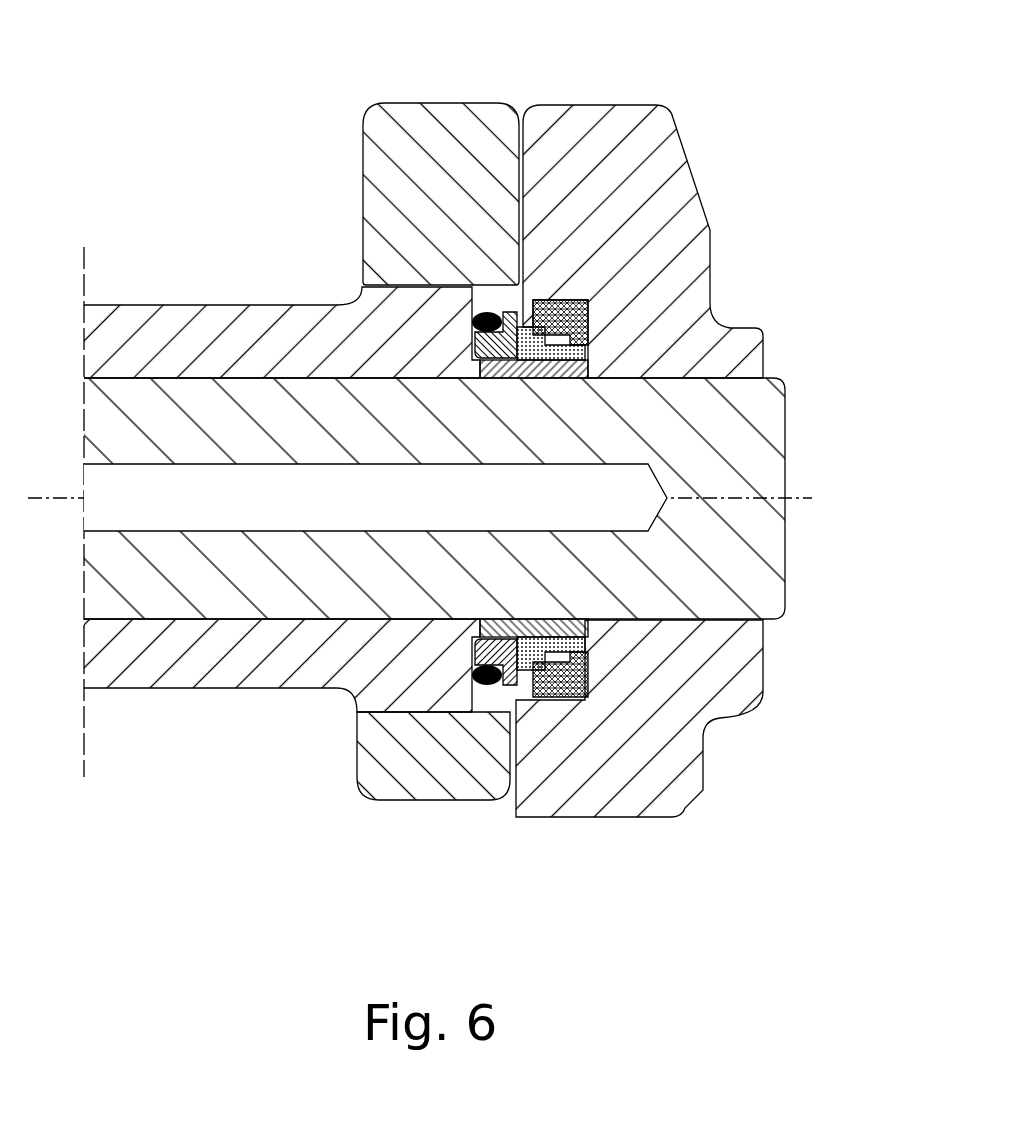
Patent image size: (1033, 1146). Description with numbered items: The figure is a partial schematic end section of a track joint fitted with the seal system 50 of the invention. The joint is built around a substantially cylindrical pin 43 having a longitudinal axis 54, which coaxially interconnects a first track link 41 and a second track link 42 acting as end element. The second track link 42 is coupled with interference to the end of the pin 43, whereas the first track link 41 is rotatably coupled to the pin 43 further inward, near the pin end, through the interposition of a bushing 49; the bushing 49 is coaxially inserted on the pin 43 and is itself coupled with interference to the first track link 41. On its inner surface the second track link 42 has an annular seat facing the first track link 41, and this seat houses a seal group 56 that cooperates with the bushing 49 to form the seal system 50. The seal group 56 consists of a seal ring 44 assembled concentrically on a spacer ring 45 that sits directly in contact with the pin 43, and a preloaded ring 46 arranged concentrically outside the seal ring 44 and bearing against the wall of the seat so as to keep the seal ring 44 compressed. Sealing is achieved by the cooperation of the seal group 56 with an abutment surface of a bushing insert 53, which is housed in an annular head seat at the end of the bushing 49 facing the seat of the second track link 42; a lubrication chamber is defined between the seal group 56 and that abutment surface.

The first track link 41 is at (420, 782).
The second track link 42 is at (593, 800).
The pin 43 is at (747, 590).
The seal ring 44 is at (587, 353).
The spacer ring 45 is at (557, 372).
The preloaded ring 46 is at (570, 315).
The bushing 49 is at (235, 660).
The seal system 50 is at (535, 263).
The bushing insert 53 is at (463, 328).
The longitudinal axis 54 is at (797, 505).
The seal group 56 is at (590, 285).